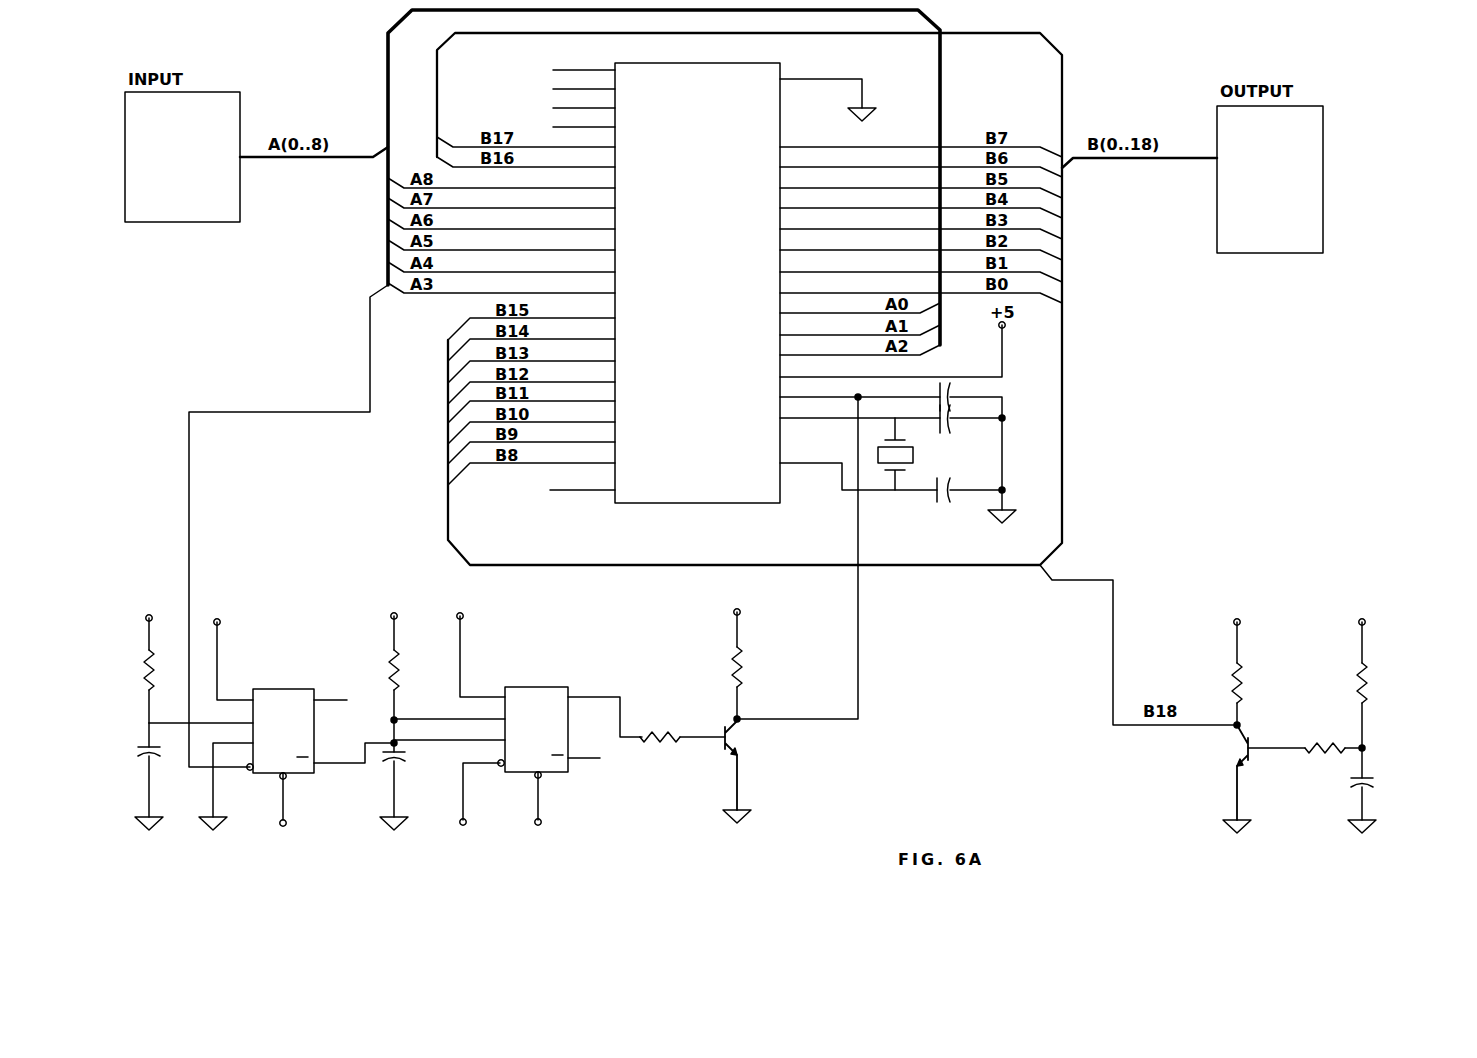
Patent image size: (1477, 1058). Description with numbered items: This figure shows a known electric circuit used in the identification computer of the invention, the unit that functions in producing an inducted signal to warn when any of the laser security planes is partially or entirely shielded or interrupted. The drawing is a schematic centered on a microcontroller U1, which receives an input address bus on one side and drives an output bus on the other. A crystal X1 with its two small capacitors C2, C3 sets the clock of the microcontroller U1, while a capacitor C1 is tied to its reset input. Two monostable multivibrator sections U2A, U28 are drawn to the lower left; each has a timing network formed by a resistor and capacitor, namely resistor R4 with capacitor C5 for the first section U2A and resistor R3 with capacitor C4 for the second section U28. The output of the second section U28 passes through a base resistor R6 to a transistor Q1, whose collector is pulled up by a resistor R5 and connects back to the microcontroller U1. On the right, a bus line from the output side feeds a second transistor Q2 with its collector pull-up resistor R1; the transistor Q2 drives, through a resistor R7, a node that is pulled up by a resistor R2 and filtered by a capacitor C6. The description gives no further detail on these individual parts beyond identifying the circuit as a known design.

The 8748 microcontroller U1 is at (705, 285).
The 4528 monostable multivibrator A U2A is at (271, 722).
The 4528 monostable multivibrator B U28 is at (517, 718).
The resistor 10K R1 is at (1252, 659).
The resistor 10K R2 is at (1382, 672).
The resistor 470K R3 is at (415, 654).
The resistor 470K R4 is at (168, 658).
The resistor 10K R5 is at (756, 652).
The resistor 5K R6 is at (680, 749).
The resistor 5K R7 is at (1305, 736).
The capacitor 1UF C1 is at (973, 394).
The capacitor 20P C2 is at (937, 497).
The capacitor 20P C3 is at (937, 415).
The capacitor 1UF C4 is at (417, 773).
The capacitor 1UF C5 is at (162, 776).
The capacitor 0.1U C6 is at (1384, 789).
The transistor C1815 Q1 is at (763, 769).
The transistor C1815 Q2 is at (1205, 777).
The crystal 6.00MHZ X1 is at (936, 454).